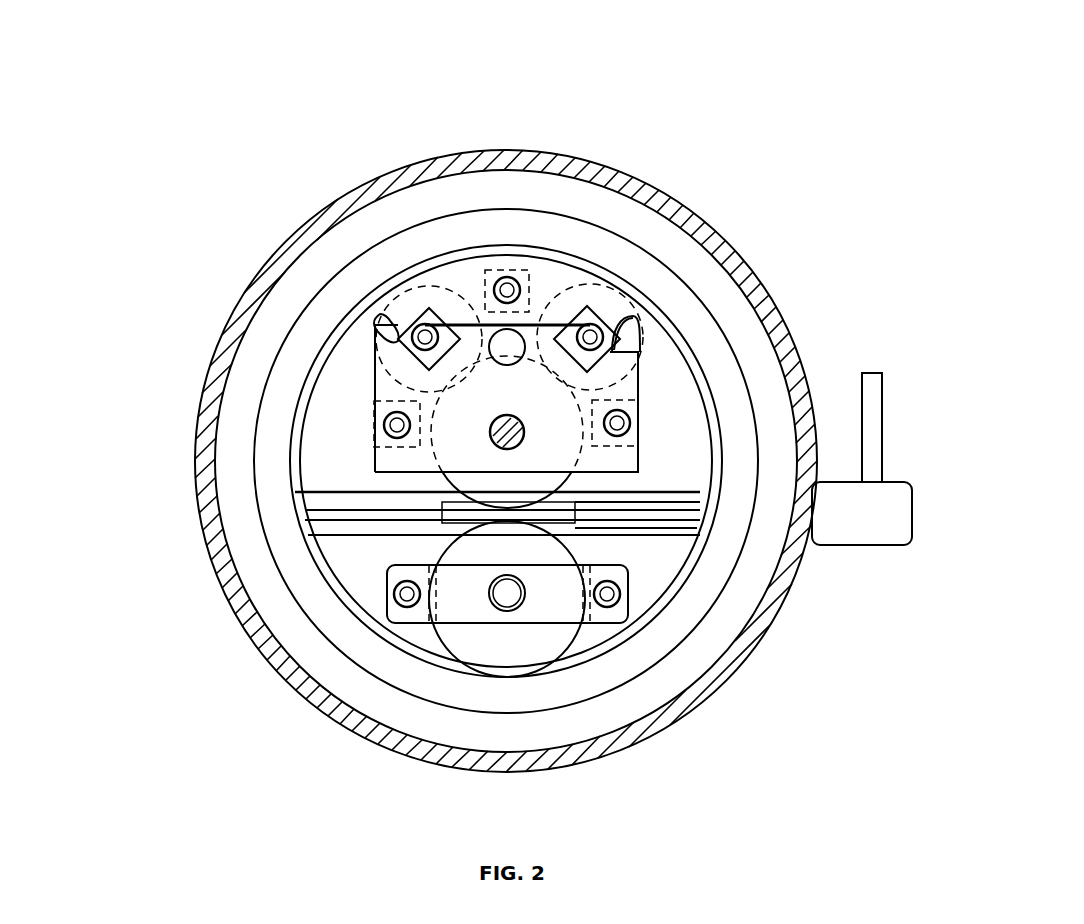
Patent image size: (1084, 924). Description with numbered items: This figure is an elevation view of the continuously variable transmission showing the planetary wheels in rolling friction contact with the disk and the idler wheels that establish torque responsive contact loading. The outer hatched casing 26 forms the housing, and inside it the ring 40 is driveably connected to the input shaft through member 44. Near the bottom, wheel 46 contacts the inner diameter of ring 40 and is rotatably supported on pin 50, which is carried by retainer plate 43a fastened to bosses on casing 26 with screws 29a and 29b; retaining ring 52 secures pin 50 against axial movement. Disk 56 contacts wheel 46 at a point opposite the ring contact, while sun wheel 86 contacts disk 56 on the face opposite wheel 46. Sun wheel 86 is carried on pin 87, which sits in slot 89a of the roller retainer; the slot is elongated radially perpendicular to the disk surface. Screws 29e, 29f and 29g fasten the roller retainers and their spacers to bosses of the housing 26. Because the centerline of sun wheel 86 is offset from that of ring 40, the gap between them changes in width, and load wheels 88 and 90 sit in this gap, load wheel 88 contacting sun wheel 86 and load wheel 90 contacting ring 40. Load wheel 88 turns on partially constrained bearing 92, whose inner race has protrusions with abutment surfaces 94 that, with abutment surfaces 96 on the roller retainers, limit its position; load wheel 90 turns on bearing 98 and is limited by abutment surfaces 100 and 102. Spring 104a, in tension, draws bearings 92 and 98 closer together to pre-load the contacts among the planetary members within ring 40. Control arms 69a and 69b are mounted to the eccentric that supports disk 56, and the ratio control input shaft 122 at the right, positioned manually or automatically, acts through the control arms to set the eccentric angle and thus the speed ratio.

The casing 26 is at (217, 588).
The member 44 is at (327, 615).
The ring 40 is at (297, 455).
The disk 56 is at (648, 600).
The ratio control input shaft 122 is at (873, 405).
The load wheel 88 is at (400, 305).
The spring 104a is at (591, 328).
The abutment surface 94 is at (397, 337).
The bearing 92 is at (425, 337).
The sun wheel 86 is at (372, 335).
The bearing 98 is at (598, 313).
The load wheel 90 is at (590, 337).
The abutment surface 100 is at (637, 307).
The screw 29f is at (508, 283).
The abutment surface 96 is at (397, 423).
The screw 29e is at (377, 407).
The abutment surface 102 is at (638, 352).
The screw 29g is at (620, 422).
The pin 87 is at (490, 443).
The slot 89a is at (468, 475).
The control arm 69a is at (680, 503).
The control arm 69b is at (612, 513).
The retainer plate 43a is at (408, 617).
The wheel 46 is at (493, 647).
The screw 29a is at (397, 600).
The screw 29b is at (607, 598).
The pin 50 is at (513, 603).
The retaining ring 52 is at (497, 610).